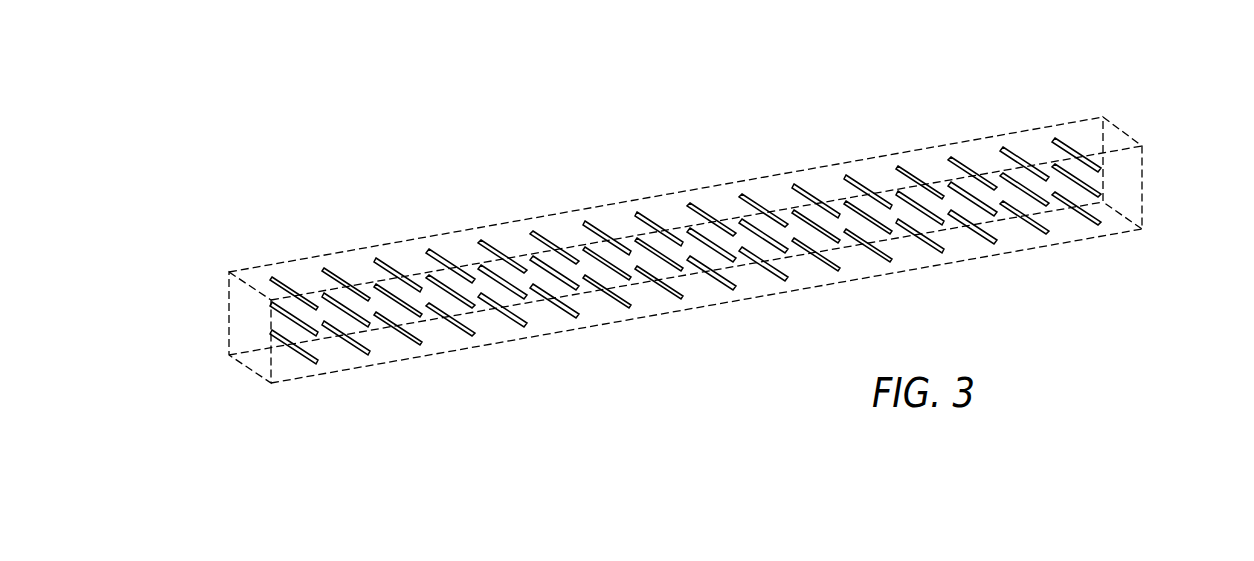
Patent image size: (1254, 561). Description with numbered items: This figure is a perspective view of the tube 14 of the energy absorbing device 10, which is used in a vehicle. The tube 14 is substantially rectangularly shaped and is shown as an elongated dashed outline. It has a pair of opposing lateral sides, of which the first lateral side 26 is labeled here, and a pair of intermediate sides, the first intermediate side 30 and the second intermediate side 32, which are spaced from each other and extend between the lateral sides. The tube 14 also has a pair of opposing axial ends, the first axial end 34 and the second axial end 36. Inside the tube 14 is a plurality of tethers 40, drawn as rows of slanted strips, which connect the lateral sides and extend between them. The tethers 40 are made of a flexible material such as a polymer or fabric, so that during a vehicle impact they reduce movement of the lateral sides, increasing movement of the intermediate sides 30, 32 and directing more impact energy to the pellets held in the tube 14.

The energy absorbing device 10 is at (1153, 87).
The tube 14 is at (1148, 205).
The first lateral side 26 is at (672, 218).
The first intermediate side 30 is at (463, 238).
The second intermediate side 32 is at (253, 377).
The first axial end 34 is at (242, 323).
The second axial end 36 is at (1150, 158).
The tethers 40 is at (287, 278).